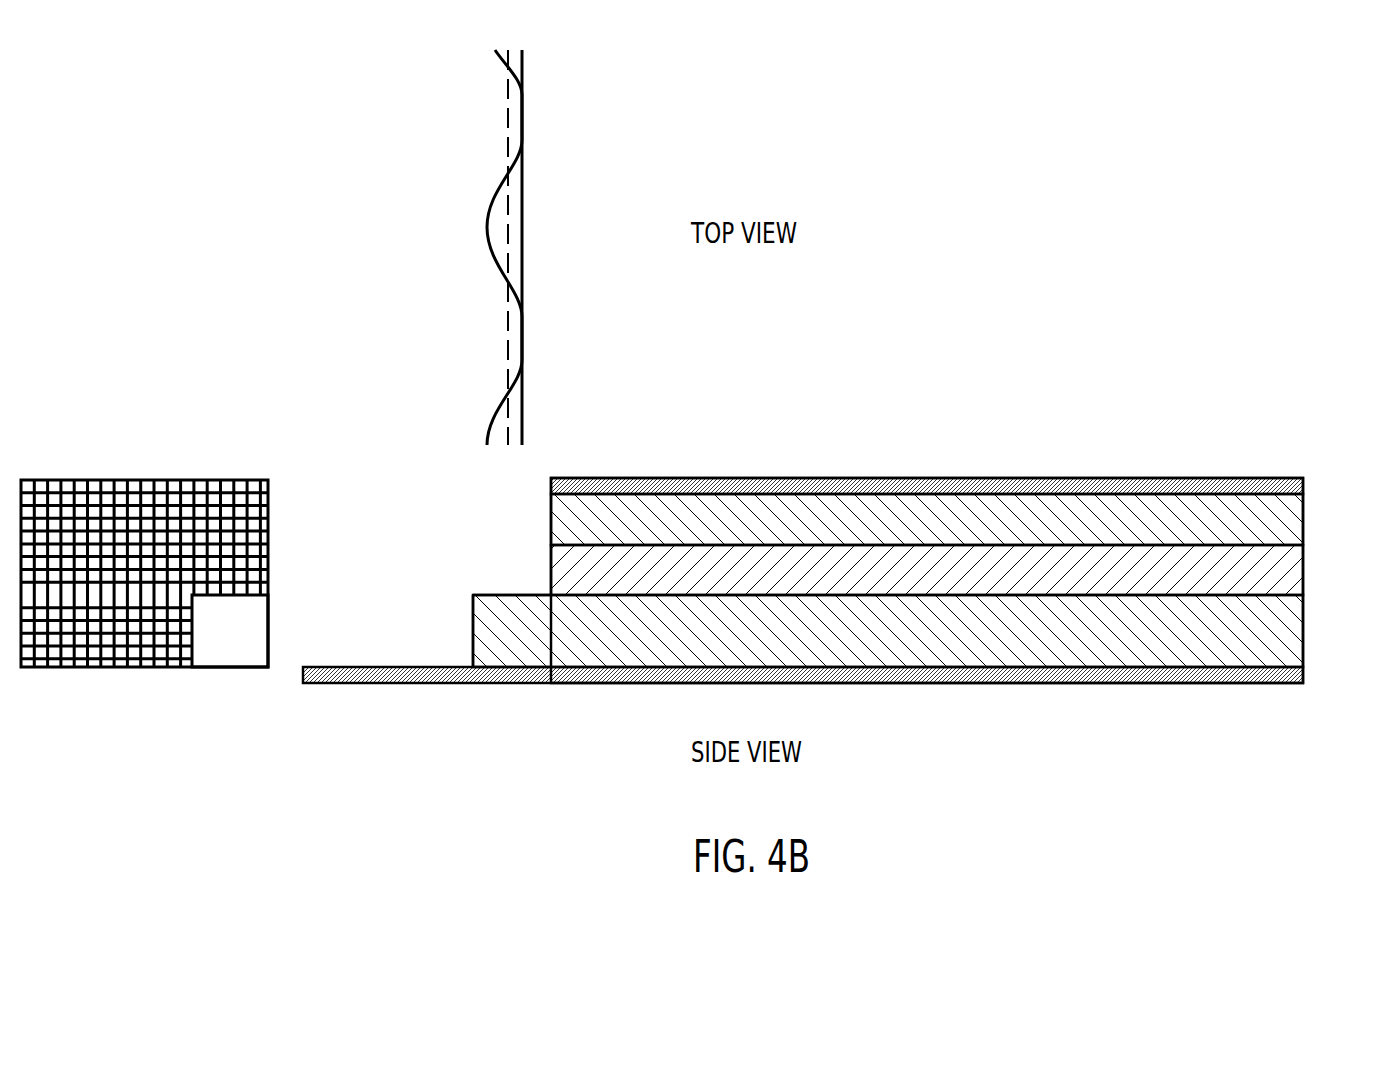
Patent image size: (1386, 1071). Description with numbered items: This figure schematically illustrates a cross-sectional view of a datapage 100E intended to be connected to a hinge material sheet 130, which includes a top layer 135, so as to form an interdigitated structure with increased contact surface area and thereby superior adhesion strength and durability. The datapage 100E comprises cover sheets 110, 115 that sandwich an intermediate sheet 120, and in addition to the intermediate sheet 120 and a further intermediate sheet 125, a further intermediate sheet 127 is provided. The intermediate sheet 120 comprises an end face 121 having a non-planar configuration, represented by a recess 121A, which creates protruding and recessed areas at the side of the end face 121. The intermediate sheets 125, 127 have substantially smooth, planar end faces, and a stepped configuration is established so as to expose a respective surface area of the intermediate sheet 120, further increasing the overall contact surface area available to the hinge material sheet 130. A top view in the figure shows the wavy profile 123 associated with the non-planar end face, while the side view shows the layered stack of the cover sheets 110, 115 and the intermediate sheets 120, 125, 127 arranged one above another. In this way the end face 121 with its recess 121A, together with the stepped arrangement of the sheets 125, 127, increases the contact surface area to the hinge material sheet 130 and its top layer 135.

The datapage 100E is at (1113, 442).
The cover sheet 110 is at (1303, 485).
The further intermediate sheet 127 is at (1303, 517).
The intermediate sheet 125 is at (1303, 570).
The intermediate sheet 120 is at (1303, 630).
The cover sheet 115 is at (1303, 672).
The end face 121 is at (408, 633).
The recessed portion 121A is at (472, 633).
The wavy edge profile 123 is at (522, 327).
The hinge material sheet 130 is at (53, 680).
The top layer 135 is at (143, 480).